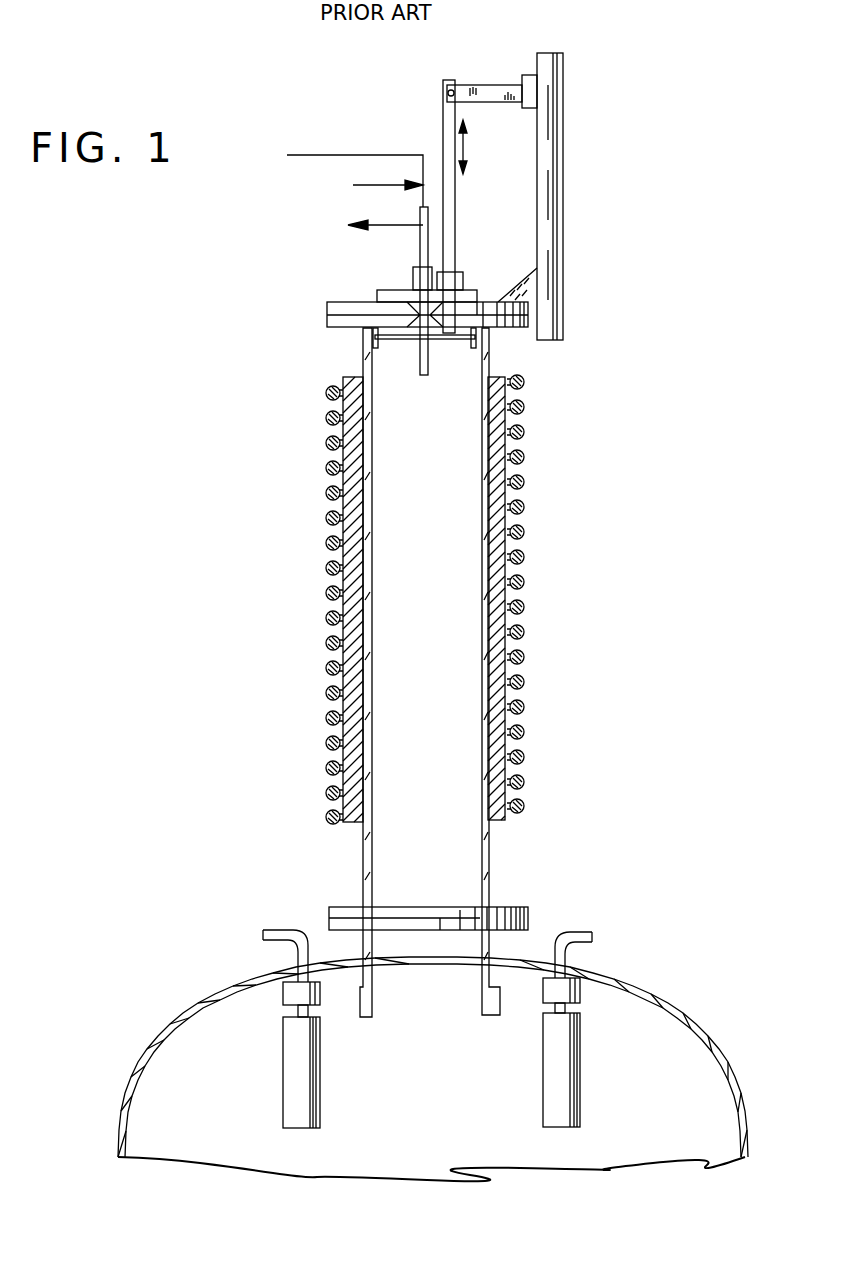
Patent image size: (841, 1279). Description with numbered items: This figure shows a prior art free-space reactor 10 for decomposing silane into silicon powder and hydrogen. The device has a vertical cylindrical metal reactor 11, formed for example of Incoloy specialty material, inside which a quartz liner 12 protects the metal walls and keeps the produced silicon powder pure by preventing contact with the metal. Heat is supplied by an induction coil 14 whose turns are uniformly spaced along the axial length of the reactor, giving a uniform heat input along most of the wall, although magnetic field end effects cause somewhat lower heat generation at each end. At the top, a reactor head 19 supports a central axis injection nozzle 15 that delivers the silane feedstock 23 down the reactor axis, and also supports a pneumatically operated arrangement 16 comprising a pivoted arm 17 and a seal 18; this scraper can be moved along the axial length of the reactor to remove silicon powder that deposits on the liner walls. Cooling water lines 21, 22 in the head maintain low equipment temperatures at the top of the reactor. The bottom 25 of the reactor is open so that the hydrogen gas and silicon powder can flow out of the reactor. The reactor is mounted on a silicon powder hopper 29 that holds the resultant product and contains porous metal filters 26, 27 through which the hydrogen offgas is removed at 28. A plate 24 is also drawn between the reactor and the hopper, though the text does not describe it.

The free-space reactor 10 is at (402, 672).
The vertical cylindrical metal reactor 11 is at (508, 443).
The quartz liner 12 is at (482, 823).
The induction coil 14 is at (520, 403).
The central axis injection nozzle 15 is at (420, 373).
The pneumatically operated arrangement 16 is at (463, 342).
The pivoted arm 17 is at (453, 208).
The seal 18 is at (457, 280).
The reactor head 19 is at (338, 302).
The cooling water line 21 is at (393, 186).
The cooling water line 22 is at (393, 226).
The silane feedstock 23 is at (392, 155).
The base plate 24 is at (512, 907).
The bottom of the reactor 25 is at (433, 1002).
The porous metal filter 26 is at (572, 1070).
The porous metal filter 27 is at (312, 1072).
The hydrogen offgas outlet 28 is at (280, 930).
The silicon powder hopper 29 is at (702, 1032).